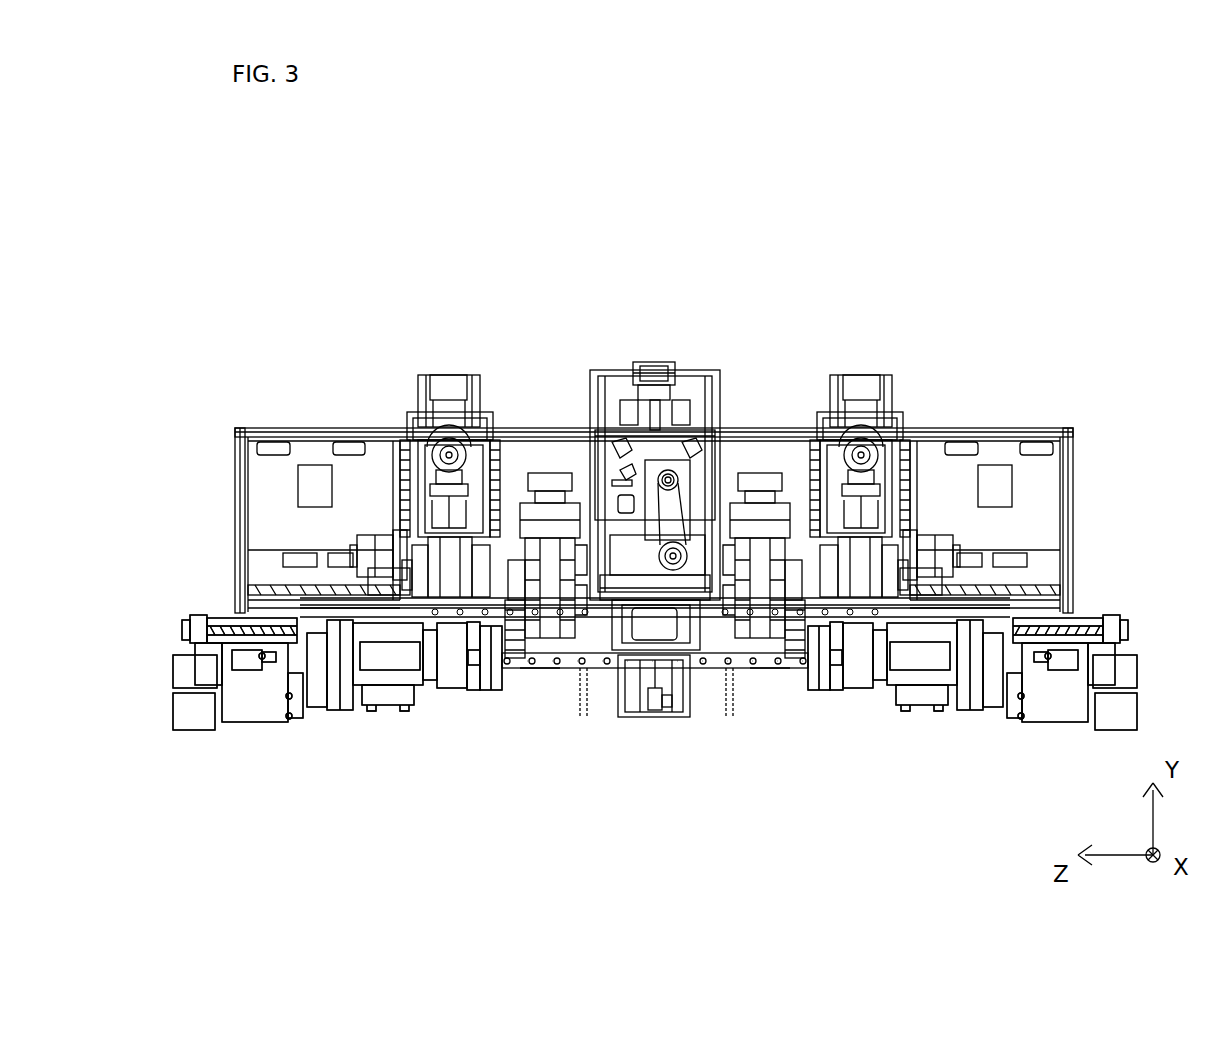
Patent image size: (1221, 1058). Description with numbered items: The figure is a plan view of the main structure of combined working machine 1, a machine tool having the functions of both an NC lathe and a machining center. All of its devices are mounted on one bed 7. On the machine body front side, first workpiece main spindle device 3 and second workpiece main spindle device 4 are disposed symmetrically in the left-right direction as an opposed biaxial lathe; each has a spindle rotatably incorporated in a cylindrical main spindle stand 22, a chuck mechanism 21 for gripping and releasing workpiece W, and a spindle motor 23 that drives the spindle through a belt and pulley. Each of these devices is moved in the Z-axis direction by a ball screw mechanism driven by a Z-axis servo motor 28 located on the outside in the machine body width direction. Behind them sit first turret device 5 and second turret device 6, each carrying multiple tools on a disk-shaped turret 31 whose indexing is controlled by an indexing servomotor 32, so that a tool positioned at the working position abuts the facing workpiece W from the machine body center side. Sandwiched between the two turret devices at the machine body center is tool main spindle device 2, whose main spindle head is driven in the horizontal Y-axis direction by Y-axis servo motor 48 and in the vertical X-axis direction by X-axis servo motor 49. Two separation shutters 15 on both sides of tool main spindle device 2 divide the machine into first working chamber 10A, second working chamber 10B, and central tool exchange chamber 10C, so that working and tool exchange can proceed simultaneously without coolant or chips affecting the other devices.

The combined working machine 1 is at (660, 263).
The tool main spindle device 2 is at (668, 440).
The first workpiece main spindle device 3 is at (315, 720).
The second workpiece main spindle device 4 is at (995, 720).
The first turret device 5 is at (425, 372).
The second turret device 6 is at (885, 372).
The bed 7 is at (1010, 450).
The first working chamber 10A is at (517, 712).
The second working chamber 10B is at (745, 712).
The tool exchange chamber 10C is at (670, 753).
The separation shutter 15 is at (590, 718).
The chuck mechanism 21 is at (478, 640).
The main spindle stand 22 is at (383, 690).
The spindle motor 23 is at (250, 700).
The Z-axis servo motor 28 is at (187, 615).
The turret 31 is at (572, 500).
The indexing servomotor 32 is at (372, 540).
The Y-axis servo motor 48 is at (650, 370).
The X-axis servo motor 49 is at (717, 510).
The workpiece W is at (484, 695).